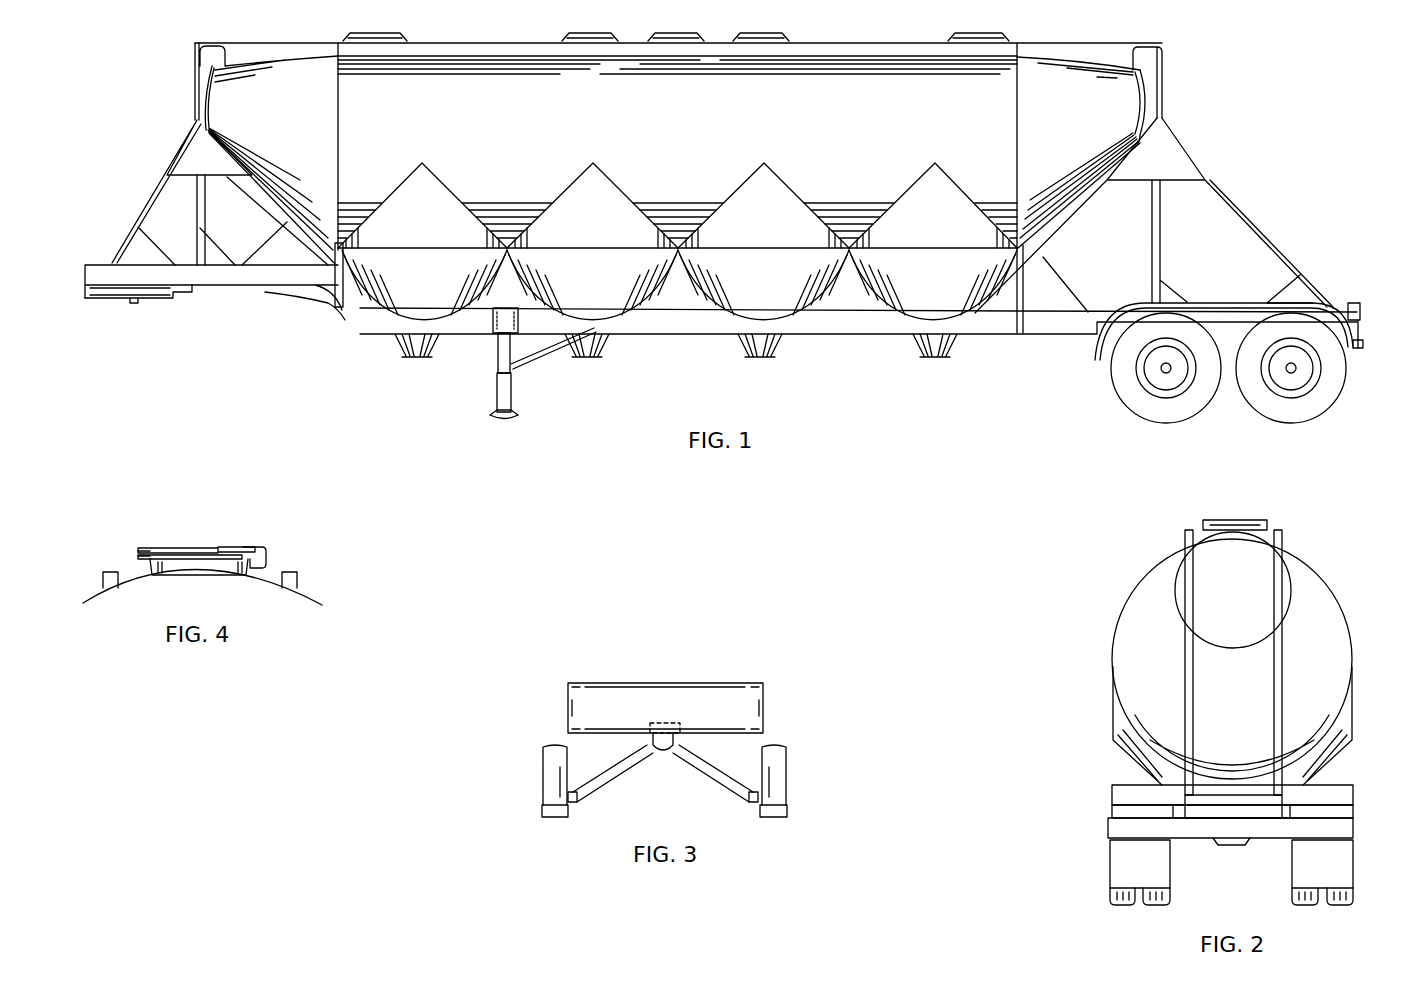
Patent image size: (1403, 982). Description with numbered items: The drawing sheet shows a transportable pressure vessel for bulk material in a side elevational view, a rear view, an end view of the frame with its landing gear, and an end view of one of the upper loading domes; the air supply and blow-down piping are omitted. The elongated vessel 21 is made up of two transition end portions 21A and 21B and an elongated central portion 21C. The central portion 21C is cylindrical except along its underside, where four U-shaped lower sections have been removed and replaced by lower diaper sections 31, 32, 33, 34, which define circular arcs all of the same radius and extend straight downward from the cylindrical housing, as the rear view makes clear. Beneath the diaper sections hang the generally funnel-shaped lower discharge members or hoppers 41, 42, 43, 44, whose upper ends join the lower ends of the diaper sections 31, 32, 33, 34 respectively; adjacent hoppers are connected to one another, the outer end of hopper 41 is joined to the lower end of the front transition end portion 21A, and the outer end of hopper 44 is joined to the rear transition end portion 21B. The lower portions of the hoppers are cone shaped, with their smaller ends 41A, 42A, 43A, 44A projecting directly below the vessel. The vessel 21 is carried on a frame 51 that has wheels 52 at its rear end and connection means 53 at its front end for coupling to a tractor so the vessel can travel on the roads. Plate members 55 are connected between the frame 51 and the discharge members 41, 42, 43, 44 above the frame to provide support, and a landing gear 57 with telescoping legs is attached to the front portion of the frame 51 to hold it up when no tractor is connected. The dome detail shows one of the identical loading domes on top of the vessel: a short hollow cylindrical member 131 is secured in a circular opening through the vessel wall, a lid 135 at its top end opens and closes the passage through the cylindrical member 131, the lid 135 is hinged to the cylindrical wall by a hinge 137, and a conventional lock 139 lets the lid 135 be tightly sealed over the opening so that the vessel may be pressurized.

In FIG. 2, the vessel 21 is at (1140, 595).
In FIG. 1, the transition end portion 21A is at (240, 95).
In FIG. 1, the transition end portion 21B is at (1133, 92).
In FIG. 1, the central portion 21C is at (1000, 153).
In FIG. 1, the diaper section 31 is at (412, 181).
In FIG. 2, the diaper section 31 is at (1122, 708).
In FIG. 1, the diaper section 32 is at (583, 181).
In FIG. 1, the diaper section 33 is at (754, 181).
In FIG. 1, the diaper section 34 is at (925, 181).
In FIG. 1, the discharge member 41 is at (408, 303).
In FIG. 1, the discharge member 42 is at (600, 312).
In FIG. 1, the discharge member 43 is at (745, 318).
In FIG. 1, the discharge member 44 is at (923, 310).
In FIG. 1, the smaller end 41A is at (418, 358).
In FIG. 1, the smaller end 42A is at (597, 360).
In FIG. 1, the smaller end 43A is at (763, 360).
In FIG. 1, the smaller end 44A is at (945, 358).
In FIG. 1, the frame 51 is at (973, 330).
In FIG. 1, the wheels 52 is at (1160, 427).
In FIG. 1, the connection means 53 is at (132, 303).
In FIG. 1, the plate members 55 is at (485, 307).
In FIG. 1, the landing gear 57 is at (505, 420).
In FIG. 4, the cylindrical member 131 is at (188, 573).
In FIG. 4, the lid 135 is at (192, 547).
In FIG. 4, the hinge 137 is at (258, 548).
In FIG. 4, the lock 139 is at (143, 548).